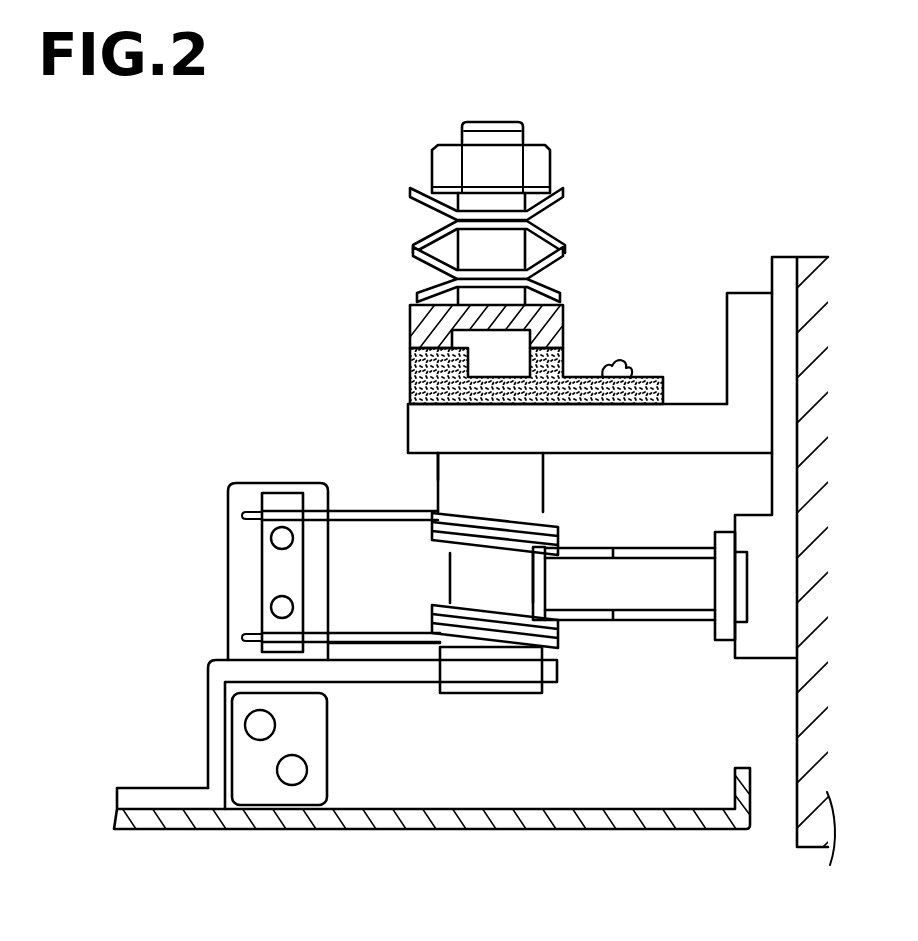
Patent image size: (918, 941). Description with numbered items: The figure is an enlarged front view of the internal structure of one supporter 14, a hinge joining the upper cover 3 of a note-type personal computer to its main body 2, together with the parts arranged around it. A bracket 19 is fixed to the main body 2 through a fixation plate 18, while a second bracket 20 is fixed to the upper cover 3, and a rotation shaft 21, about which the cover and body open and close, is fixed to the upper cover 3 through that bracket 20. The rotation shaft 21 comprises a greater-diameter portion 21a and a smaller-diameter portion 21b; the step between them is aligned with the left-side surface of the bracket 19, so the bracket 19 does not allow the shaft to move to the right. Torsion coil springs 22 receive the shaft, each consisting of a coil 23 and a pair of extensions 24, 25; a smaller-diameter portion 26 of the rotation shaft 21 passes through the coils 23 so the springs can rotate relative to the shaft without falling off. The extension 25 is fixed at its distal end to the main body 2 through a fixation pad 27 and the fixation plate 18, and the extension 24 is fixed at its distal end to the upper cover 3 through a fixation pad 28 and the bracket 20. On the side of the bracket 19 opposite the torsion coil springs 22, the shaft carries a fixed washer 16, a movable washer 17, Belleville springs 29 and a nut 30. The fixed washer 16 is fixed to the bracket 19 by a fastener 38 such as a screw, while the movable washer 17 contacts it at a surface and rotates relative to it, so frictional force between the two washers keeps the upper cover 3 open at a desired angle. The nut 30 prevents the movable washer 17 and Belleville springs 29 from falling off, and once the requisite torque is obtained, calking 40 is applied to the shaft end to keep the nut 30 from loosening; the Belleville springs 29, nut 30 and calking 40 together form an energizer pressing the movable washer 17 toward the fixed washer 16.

The main body 2 is at (797, 292).
The upper cover 3 is at (548, 809).
The supporter 14 is at (263, 419).
The fixed washer 16 is at (413, 376).
The movable washer 17 is at (410, 330).
The fixation plate 18 is at (772, 325).
The bracket 19 is at (632, 430).
The bracket 20 is at (385, 683).
The rotation shaft 21 is at (532, 478).
The greater-diameter portion 21a is at (438, 455).
The smaller-diameter portion 21b is at (560, 246).
The torsion coil spring 22 is at (490, 512).
The coil 23 is at (440, 604).
The extension 24 is at (343, 511).
The extension 25 is at (647, 620).
The smaller-diameter portion 26 is at (536, 586).
The fixation pad 27 is at (715, 632).
The fixation pad 28 is at (272, 573).
The Belleville springs 29 is at (413, 293).
The nut 30 is at (440, 170).
The fastener 38 is at (612, 374).
The calking 40 is at (465, 130).